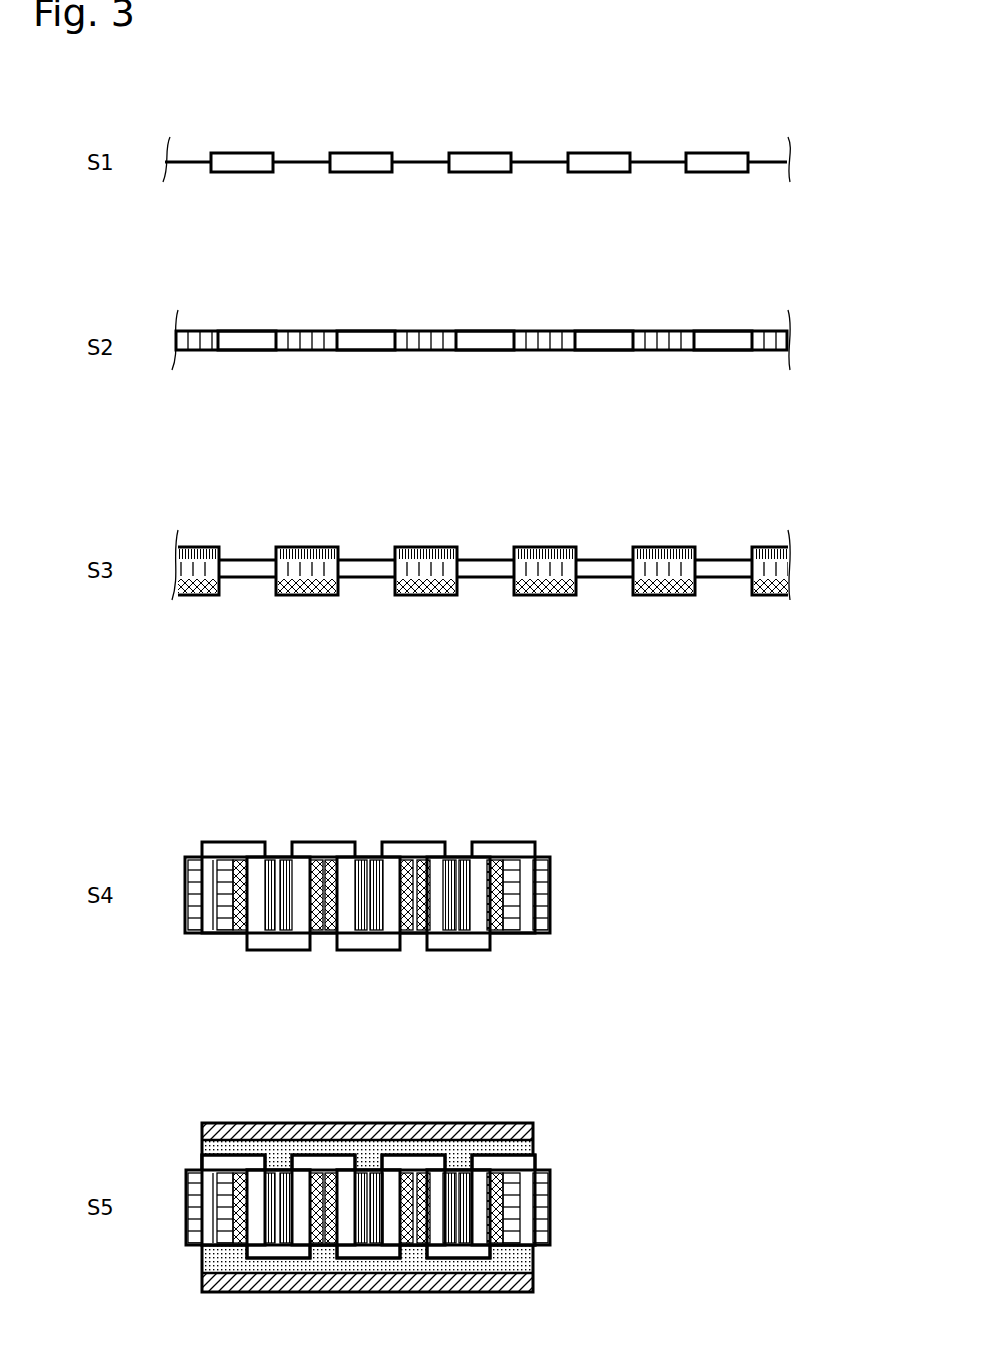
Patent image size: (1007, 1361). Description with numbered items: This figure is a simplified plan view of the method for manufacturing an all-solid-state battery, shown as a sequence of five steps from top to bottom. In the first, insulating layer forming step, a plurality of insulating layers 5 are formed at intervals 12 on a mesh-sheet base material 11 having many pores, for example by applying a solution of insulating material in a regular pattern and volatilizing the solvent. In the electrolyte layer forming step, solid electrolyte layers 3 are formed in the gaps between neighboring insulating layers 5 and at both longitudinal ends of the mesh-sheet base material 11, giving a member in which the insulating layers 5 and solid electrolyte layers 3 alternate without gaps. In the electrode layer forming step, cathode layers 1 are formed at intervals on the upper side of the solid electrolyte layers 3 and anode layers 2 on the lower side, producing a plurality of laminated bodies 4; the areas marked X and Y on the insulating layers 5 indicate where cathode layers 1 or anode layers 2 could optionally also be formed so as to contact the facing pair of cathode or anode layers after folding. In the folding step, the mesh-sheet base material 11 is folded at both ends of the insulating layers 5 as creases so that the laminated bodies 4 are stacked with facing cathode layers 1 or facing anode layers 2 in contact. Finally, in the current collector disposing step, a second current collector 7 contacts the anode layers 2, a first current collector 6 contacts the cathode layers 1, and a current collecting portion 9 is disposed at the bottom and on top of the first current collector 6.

The cathode layer 1 is at (307, 546).
The anode layer 2 is at (307, 596).
The solid electrolyte layer 3 is at (305, 330).
The laminated body 4 is at (322, 774).
The insulating layer 5 is at (243, 152).
The first current collector 6 is at (533, 1145).
The second current collector 7 is at (533, 1255).
The current collecting portion 9 is at (533, 1128).
The mesh-sheet base material 11 is at (775, 158).
The interval 12 is at (295, 139).
The area X is at (245, 546).
The area Y is at (372, 591).